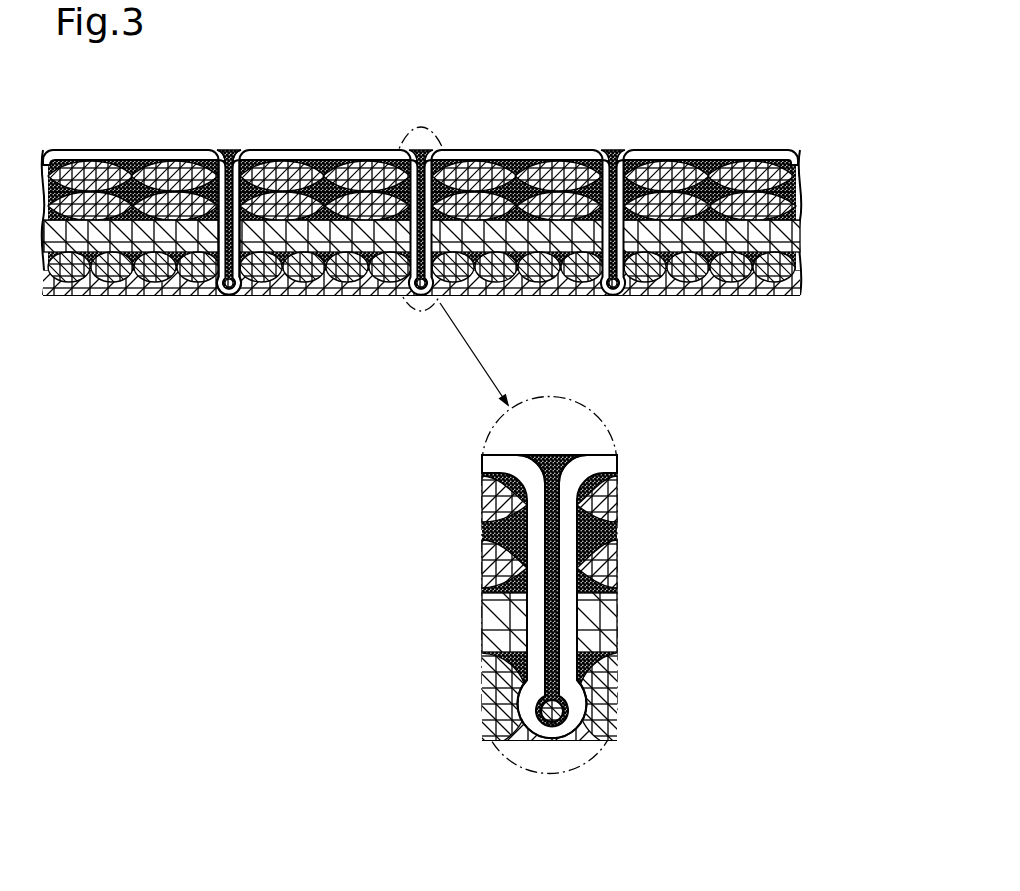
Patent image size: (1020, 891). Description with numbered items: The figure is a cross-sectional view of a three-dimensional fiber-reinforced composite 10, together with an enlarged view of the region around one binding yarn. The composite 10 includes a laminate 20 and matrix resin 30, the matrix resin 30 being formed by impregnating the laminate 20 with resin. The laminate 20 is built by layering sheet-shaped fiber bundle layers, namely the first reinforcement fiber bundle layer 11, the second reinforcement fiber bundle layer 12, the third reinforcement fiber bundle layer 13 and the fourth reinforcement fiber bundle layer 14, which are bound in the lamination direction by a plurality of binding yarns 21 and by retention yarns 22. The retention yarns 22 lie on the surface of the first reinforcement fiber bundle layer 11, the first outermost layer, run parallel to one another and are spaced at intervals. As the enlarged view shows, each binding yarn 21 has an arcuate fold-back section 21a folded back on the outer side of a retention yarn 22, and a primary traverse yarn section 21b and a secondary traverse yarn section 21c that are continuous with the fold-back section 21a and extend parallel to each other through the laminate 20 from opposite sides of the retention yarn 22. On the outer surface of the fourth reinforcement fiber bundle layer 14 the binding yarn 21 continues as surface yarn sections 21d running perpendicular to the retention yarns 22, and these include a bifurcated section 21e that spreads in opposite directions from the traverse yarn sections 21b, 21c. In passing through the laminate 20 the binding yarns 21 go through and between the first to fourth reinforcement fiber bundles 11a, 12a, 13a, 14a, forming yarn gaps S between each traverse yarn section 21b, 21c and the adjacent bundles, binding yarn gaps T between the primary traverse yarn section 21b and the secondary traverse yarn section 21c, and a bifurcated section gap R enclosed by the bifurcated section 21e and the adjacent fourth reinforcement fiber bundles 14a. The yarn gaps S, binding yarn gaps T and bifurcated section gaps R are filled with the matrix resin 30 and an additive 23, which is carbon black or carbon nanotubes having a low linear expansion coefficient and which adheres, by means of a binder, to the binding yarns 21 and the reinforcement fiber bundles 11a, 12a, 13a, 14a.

The three-dimensional fiber-reinforced composite 10 is at (772, 137).
The first reinforcement fiber bundle layer 11 is at (801, 270).
The first reinforcement fiber bundle 11a is at (783, 275).
The second reinforcement fiber bundle layer 12 is at (801, 240).
The second reinforcement fiber bundle 12a is at (733, 242).
The third reinforcement fiber bundle layer 13 is at (801, 210).
The third reinforcement fiber bundle 13a is at (688, 218).
The fourth reinforcement fiber bundle layer 14 is at (801, 172).
The fourth reinforcement fiber bundle 14a is at (653, 190).
The laminate 20 is at (338, 272).
The binding yarn 21 is at (101, 152).
The fold-back section 21a is at (229, 297).
The primary traverse yarn section 21b is at (220, 232).
The secondary traverse yarn section 21c is at (243, 232).
The surface yarn section 21d is at (176, 152).
The bifurcated section 21e is at (231, 150).
The retention yarn 22 is at (223, 284).
The additive 23 is at (535, 668).
The matrix resin 30 is at (367, 290).
The bifurcated section gap R is at (423, 157).
The binding yarn gap T is at (552, 535).
The yarn gap S is at (500, 585).